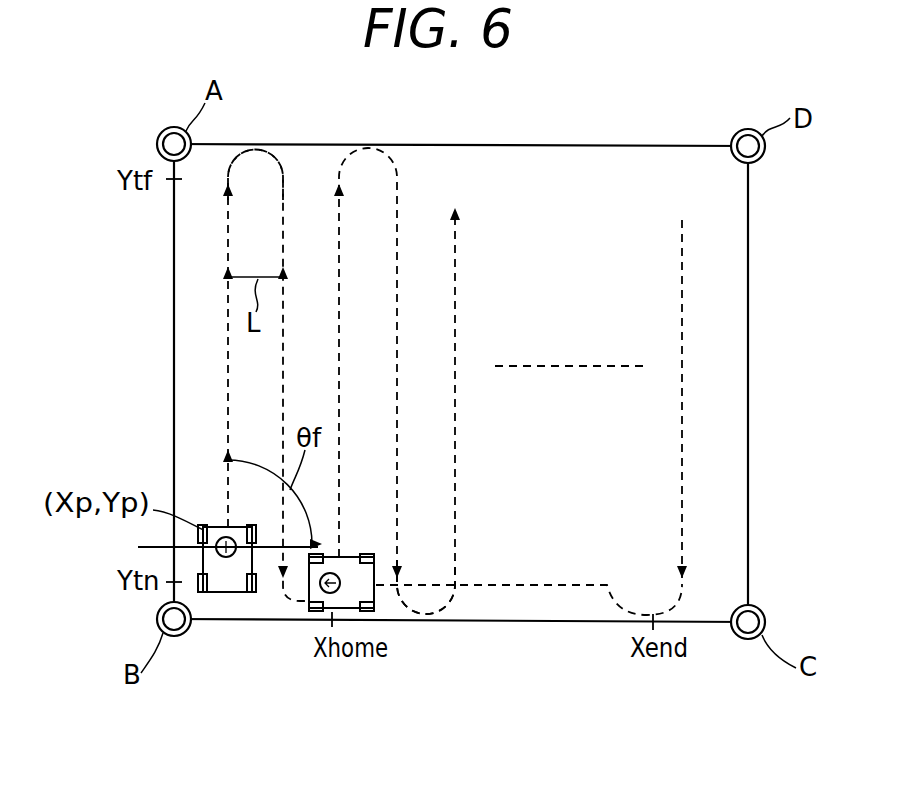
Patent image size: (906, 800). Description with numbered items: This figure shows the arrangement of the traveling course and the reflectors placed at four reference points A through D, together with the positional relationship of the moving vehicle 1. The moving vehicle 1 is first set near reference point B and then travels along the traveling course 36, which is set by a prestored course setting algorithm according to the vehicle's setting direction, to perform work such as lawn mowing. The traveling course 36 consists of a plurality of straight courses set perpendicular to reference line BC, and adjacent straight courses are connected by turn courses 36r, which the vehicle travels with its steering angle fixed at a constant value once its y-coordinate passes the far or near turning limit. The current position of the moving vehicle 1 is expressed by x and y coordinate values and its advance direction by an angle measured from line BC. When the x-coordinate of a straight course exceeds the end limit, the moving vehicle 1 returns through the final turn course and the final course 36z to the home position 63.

The moving vehicle 1 is at (352, 568).
The traveling course 36 is at (226, 410).
The turn course 36r is at (283, 170).
The final course 36z is at (525, 583).
The home position 63 is at (321, 590).